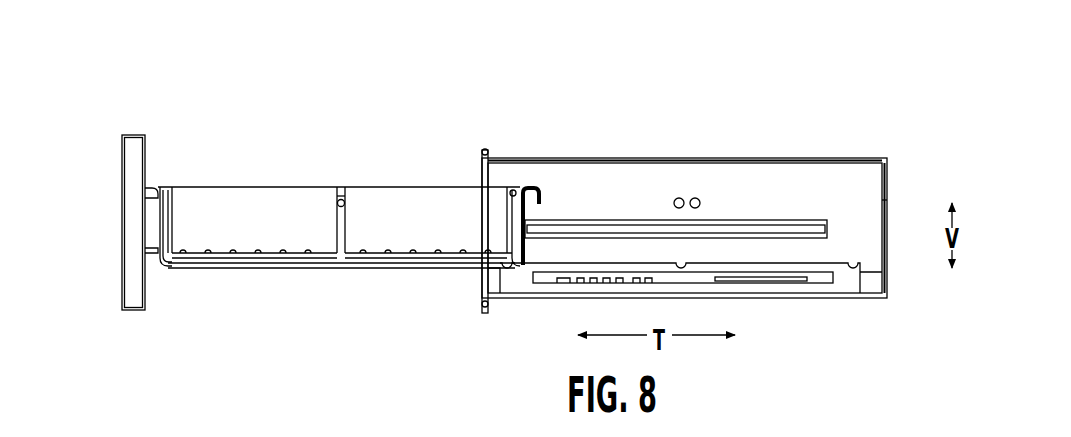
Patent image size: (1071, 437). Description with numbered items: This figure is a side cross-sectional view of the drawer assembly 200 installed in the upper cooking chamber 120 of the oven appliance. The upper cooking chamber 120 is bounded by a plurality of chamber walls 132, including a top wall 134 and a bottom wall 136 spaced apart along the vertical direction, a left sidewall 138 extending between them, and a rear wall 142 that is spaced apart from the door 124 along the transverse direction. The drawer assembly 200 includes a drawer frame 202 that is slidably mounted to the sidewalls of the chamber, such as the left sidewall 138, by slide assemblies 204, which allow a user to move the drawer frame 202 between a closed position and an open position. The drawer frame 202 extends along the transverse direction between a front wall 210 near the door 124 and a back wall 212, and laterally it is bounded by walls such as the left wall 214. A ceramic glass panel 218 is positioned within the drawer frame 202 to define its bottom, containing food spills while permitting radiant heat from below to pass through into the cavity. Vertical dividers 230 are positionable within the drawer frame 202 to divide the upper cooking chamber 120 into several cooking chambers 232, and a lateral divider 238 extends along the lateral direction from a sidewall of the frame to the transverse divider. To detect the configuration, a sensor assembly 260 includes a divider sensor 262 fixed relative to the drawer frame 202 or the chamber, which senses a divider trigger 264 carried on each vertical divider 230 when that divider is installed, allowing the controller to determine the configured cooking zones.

The drawer assembly 200 is at (213, 78).
The door 124 is at (128, 232).
The front wall 210 is at (153, 233).
The drawer frame 202 is at (170, 262).
The left wall 214 is at (247, 210).
The cooking chamber 232 is at (440, 204).
The vertical divider 230 is at (327, 234).
The ceramic glass panel 218 is at (449, 268).
The lateral divider 238 is at (347, 240).
The divider trigger 264 is at (345, 187).
The back wall 212 is at (528, 207).
The upper cooking chamber 120 is at (803, 183).
The top wall 134 is at (858, 158).
The rear wall 142 is at (887, 178).
The chamber wall 132 is at (891, 210).
The slide assembly 204 is at (585, 215).
The sensor assembly 260 is at (672, 181).
The divider sensor 262 is at (700, 200).
The left sidewall 138 is at (868, 247).
The bottom wall 136 is at (845, 300).